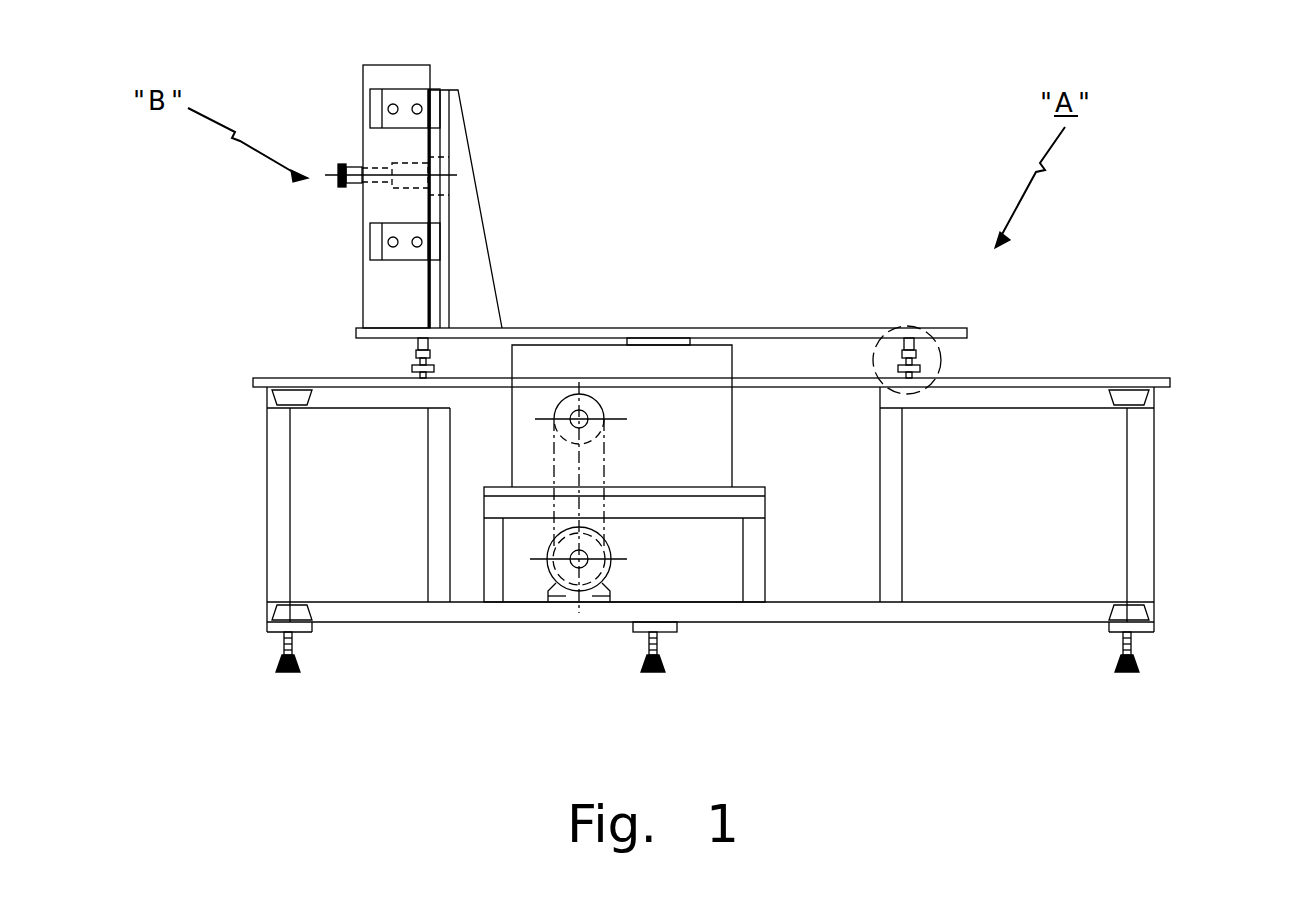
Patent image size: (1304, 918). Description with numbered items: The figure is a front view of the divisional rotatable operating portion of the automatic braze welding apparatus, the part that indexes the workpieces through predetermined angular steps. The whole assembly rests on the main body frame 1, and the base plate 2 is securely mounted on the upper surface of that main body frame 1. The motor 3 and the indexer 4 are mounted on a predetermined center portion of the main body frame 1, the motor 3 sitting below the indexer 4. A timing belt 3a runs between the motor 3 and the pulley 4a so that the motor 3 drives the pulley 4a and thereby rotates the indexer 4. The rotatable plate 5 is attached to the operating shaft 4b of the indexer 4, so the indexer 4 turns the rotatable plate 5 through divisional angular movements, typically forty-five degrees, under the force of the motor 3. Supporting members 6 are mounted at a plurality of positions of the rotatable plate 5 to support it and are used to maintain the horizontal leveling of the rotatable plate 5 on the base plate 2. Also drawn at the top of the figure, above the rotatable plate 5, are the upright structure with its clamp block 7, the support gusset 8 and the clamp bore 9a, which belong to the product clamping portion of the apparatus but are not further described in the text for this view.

The main body frame 1 is at (766, 529).
The base plate 2 is at (711, 322).
The motor 3 is at (624, 547).
The timing belt 3a is at (512, 554).
The indexer 4 is at (624, 363).
The pulley 4a is at (581, 332).
The operating shaft 4b is at (658, 287).
The rotatable plate 5 is at (661, 276).
The supporting members 6 is at (741, 341).
The clamp block 7 is at (375, 66).
The support gusset 8 is at (501, 209).
The clamp bore 9a is at (430, 136).